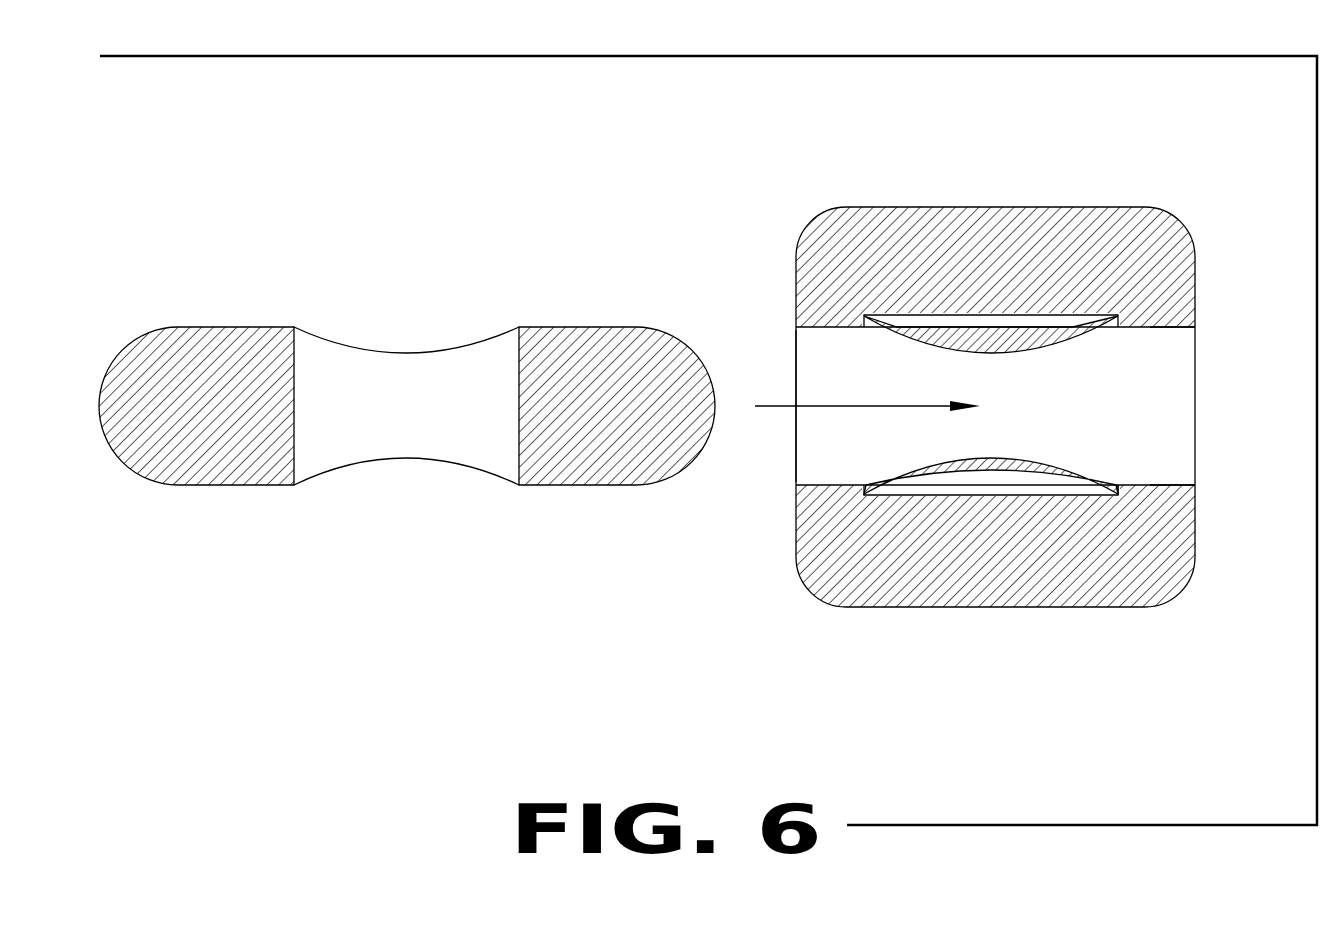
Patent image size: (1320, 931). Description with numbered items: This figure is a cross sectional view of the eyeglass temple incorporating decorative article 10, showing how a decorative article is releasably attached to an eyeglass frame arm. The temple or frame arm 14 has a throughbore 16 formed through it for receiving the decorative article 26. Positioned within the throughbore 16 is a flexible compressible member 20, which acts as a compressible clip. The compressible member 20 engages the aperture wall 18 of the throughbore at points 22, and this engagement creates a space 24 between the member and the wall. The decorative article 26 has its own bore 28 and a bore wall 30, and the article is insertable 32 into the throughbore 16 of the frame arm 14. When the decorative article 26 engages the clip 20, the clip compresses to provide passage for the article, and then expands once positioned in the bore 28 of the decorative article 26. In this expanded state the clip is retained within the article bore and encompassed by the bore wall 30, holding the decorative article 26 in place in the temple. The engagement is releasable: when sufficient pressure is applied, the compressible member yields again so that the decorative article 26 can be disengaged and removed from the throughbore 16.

The eyeglass temple incorporating decorative article 10 is at (681, 176).
The frame arm 14 is at (987, 233).
The aperture bore 16 is at (1152, 373).
The aperture wall 18 is at (837, 441).
The compressible clip 20 is at (1003, 462).
The clip base 22 is at (1120, 480).
The clip 24 is at (997, 481).
The decorative article 26 is at (190, 337).
The article bore 28 is at (405, 393).
The decorative article bore wall 30 is at (405, 433).
The insertable 32 is at (779, 405).